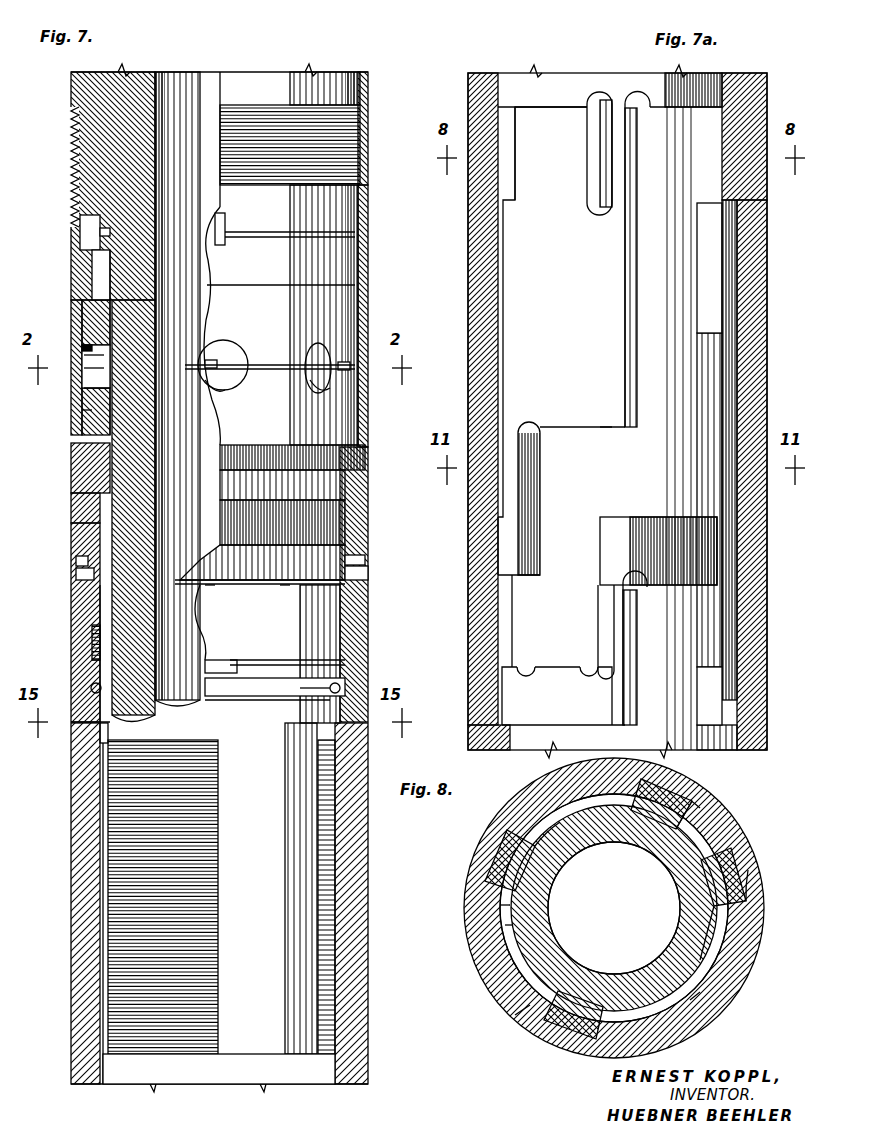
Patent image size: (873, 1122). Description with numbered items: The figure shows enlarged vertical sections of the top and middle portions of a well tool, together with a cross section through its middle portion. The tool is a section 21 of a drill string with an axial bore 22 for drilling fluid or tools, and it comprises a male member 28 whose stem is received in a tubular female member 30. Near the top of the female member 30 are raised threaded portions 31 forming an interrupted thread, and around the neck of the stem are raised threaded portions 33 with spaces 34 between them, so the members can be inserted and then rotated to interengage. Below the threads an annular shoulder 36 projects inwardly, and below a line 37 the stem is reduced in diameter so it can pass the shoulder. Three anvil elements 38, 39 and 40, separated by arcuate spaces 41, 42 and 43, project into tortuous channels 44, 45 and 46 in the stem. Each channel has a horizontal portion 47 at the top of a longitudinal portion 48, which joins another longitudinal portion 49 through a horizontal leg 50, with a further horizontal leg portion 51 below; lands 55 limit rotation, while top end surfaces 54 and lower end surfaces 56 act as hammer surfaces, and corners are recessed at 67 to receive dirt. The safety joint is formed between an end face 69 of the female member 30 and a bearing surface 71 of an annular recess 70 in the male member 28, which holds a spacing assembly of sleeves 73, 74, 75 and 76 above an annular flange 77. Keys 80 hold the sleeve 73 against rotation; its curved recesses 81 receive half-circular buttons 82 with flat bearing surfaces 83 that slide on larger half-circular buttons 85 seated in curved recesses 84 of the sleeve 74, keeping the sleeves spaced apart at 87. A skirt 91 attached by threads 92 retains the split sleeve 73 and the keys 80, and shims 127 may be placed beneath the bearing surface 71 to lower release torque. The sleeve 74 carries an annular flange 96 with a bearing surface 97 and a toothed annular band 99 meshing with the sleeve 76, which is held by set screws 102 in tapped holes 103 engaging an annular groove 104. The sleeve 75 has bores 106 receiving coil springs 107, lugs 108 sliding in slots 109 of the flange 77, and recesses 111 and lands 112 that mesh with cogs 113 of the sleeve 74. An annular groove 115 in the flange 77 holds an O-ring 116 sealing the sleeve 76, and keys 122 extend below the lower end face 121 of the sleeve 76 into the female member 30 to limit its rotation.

In FIG. 7, the section of a drill string 21 is at (71, 78).
In FIG. 7, the axial bore 22 is at (166, 72).
In FIG. 8, the axial bore 22 is at (554, 928).
In FIG. 7, the male member 28 is at (234, 72).
In FIG. 8, the male member 28 is at (540, 905).
In FIG. 7, the female member 30 is at (76, 938).
In FIG. 7A, the female member 30 is at (478, 390).
In FIG. 8, the female member 30 is at (478, 946).
In FIG. 7, the raised threaded portions 31 is at (336, 852).
In FIG. 7, the raised threaded portions 33 is at (212, 950).
In FIG. 7, the spaces 34 is at (108, 878).
In FIG. 7A, the annular shoulder 36 is at (506, 740).
In FIG. 7A, the line 37 is at (590, 730).
In FIG. 7A, the anvil element 38 is at (740, 120).
In FIG. 8, the anvil element 38 is at (726, 882).
In FIG. 8, the anvil element 39 is at (516, 1018).
In FIG. 8, the anvil element 40 is at (552, 830).
In FIG. 8, the arcuate space 41 is at (690, 1002).
In FIG. 8, the arcuate space 42 is at (500, 905).
In FIG. 8, the arcuate space 43 is at (712, 802).
In FIG. 7A, the tortuous channel 44 is at (700, 348).
In FIG. 8, the tortuous channel 44 is at (702, 970).
In FIG. 7A, the tortuous channel 45 is at (514, 190).
In FIG. 8, the tortuous channel 45 is at (506, 928).
In FIG. 7A, the tortuous channel 46 is at (722, 630).
In FIG. 8, the tortuous channel 46 is at (672, 812).
In FIG. 7A, the horizontal portion 47 is at (724, 200).
In FIG. 7A, the longitudinal portion 48 is at (660, 290).
In FIG. 7A, the longitudinal portion 49 is at (540, 546).
In FIG. 7A, the horizontal leg 50 is at (590, 427).
In FIG. 7A, the horizontal leg portion 51 is at (512, 612).
In FIG. 7A, the top end surfaces 54 is at (612, 428).
In FIG. 7A, the lands 55 is at (600, 150).
In FIG. 8, the lands 55 is at (500, 852).
In FIG. 7A, the lower end surfaces 56 is at (610, 517).
In FIG. 7A, the recess 67 is at (530, 424).
In FIG. 7, the end face 69 is at (80, 720).
In FIG. 7, the annular recess 70 is at (108, 272).
In FIG. 7, the bearing surface 71 is at (100, 232).
In FIG. 7, the sleeve 73 is at (96, 262).
In FIG. 7, the sleeve 74 is at (88, 452).
In FIG. 7, the sleeve 75 is at (100, 600).
In FIG. 7, the sleeve 76 is at (86, 526).
In FIG. 7, the annular flange 77 is at (92, 684).
In FIG. 7, the keys 80 is at (88, 222).
In FIG. 7, the curved recesses 81 is at (84, 344).
In FIG. 7, the half-circular buttons 82 is at (84, 355).
In FIG. 7, the flat bearing surface 83 is at (84, 368).
In FIG. 7, the curved recesses 84 is at (84, 410).
In FIG. 7, the half-circular buttons 85 is at (84, 389).
In FIG. 7, the spacing 87 is at (270, 370).
In FIG. 7, the skirt 91 is at (365, 280).
In FIG. 7, the threads 92 is at (362, 150).
In FIG. 7, the annular flange 96 is at (366, 457).
In FIG. 7, the bearing surface 97 is at (86, 495).
In FIG. 7, the annular band 99 is at (340, 528).
In FIG. 7, the set screws 102 is at (78, 573).
In FIG. 7, the tapped holes 103 is at (78, 562).
In FIG. 7, the annular groove 104 is at (288, 588).
In FIG. 7, the bores 106 is at (92, 633).
In FIG. 7, the coil springs 107 is at (92, 650).
In FIG. 7, the lugs 108 is at (228, 653).
In FIG. 7, the slots 109 is at (230, 697).
In FIG. 7, the recesses 111 is at (218, 588).
In FIG. 7, the lands 112 is at (252, 595).
In FIG. 7, the cogs 113 is at (262, 586).
In FIG. 7, the annular groove 115 is at (268, 703).
In FIG. 7, the O-ring 116 is at (342, 686).
In FIG. 7, the lower end face 121 is at (100, 735).
In FIG. 7, the keys 122 is at (98, 748).
In FIG. 7, the shims 127 is at (356, 235).